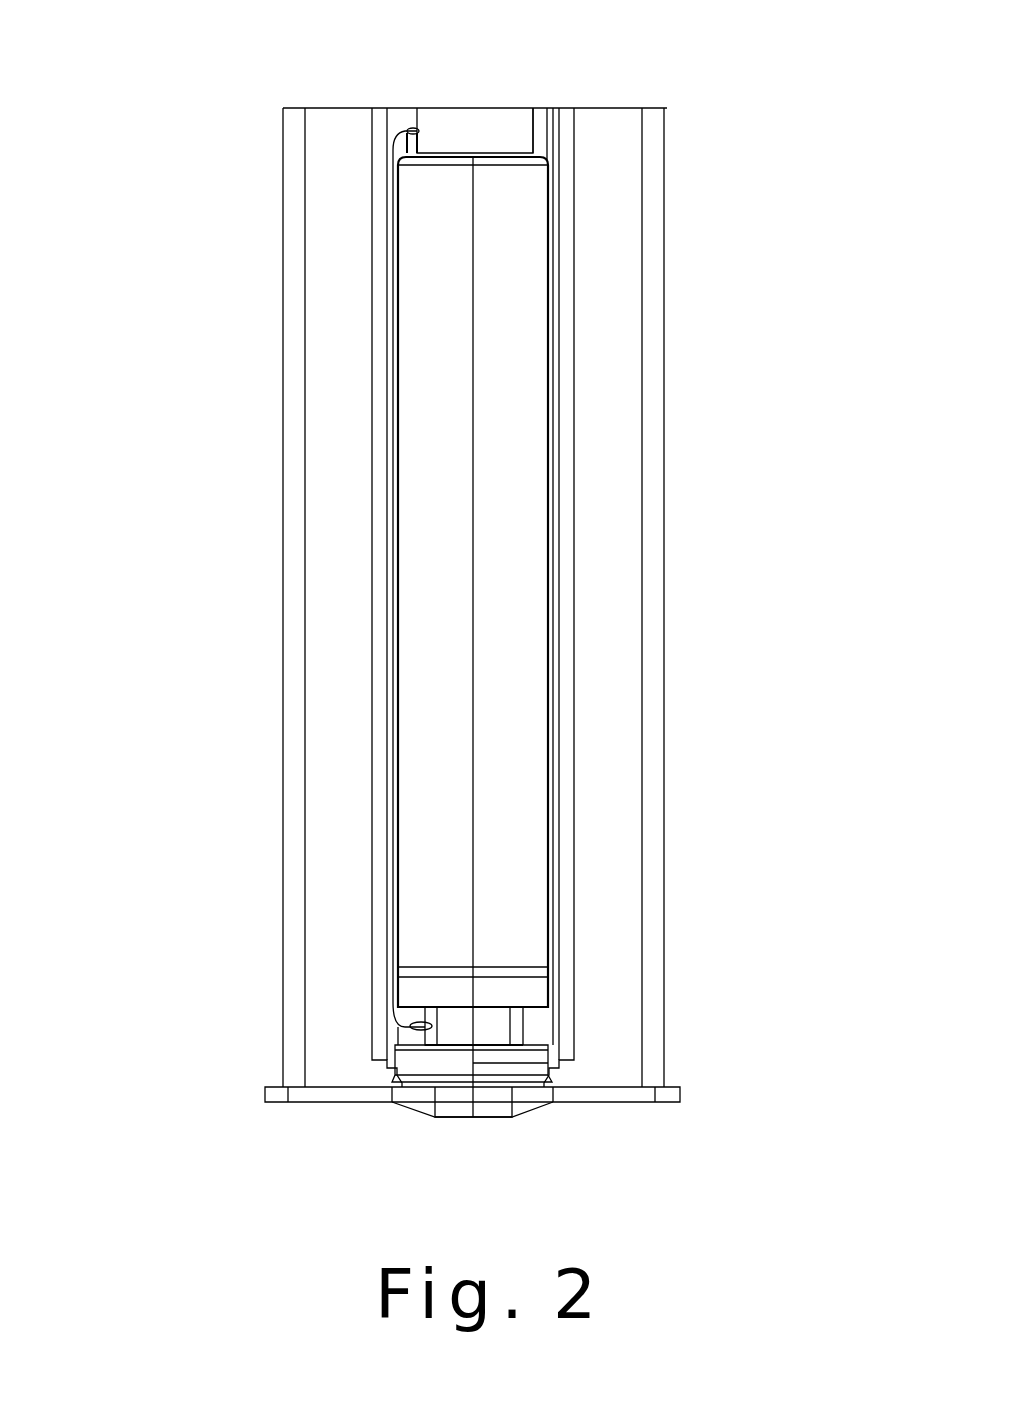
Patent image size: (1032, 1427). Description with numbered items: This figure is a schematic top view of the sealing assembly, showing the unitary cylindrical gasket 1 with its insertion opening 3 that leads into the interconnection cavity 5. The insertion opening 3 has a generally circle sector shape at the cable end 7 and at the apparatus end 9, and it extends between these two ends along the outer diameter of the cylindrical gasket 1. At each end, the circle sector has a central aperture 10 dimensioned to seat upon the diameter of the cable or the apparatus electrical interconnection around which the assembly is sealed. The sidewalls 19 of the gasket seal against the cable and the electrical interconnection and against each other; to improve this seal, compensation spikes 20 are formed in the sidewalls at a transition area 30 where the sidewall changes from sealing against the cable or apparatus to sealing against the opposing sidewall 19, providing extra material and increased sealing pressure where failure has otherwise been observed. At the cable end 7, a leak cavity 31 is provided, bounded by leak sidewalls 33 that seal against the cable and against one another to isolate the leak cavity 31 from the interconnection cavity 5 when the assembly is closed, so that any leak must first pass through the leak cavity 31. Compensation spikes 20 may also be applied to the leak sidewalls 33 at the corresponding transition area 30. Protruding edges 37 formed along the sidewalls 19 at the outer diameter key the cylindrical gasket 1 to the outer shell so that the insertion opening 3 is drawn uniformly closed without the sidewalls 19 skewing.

The cylindrical gasket 1 is at (247, 528).
The insertion opening 3 is at (450, 360).
The interconnection cavity 5 is at (455, 745).
The cable end 7 is at (470, 1172).
The apparatus end 9 is at (462, 67).
The central aperture 10 is at (482, 125).
The sidewall 19 is at (398, 228).
The compensation spike 20 is at (417, 130).
The transition area 30 is at (533, 142).
The leak cavity 31 is at (572, 1061).
The leak sidewall 33 is at (410, 1037).
The protruding edge 37 is at (373, 872).